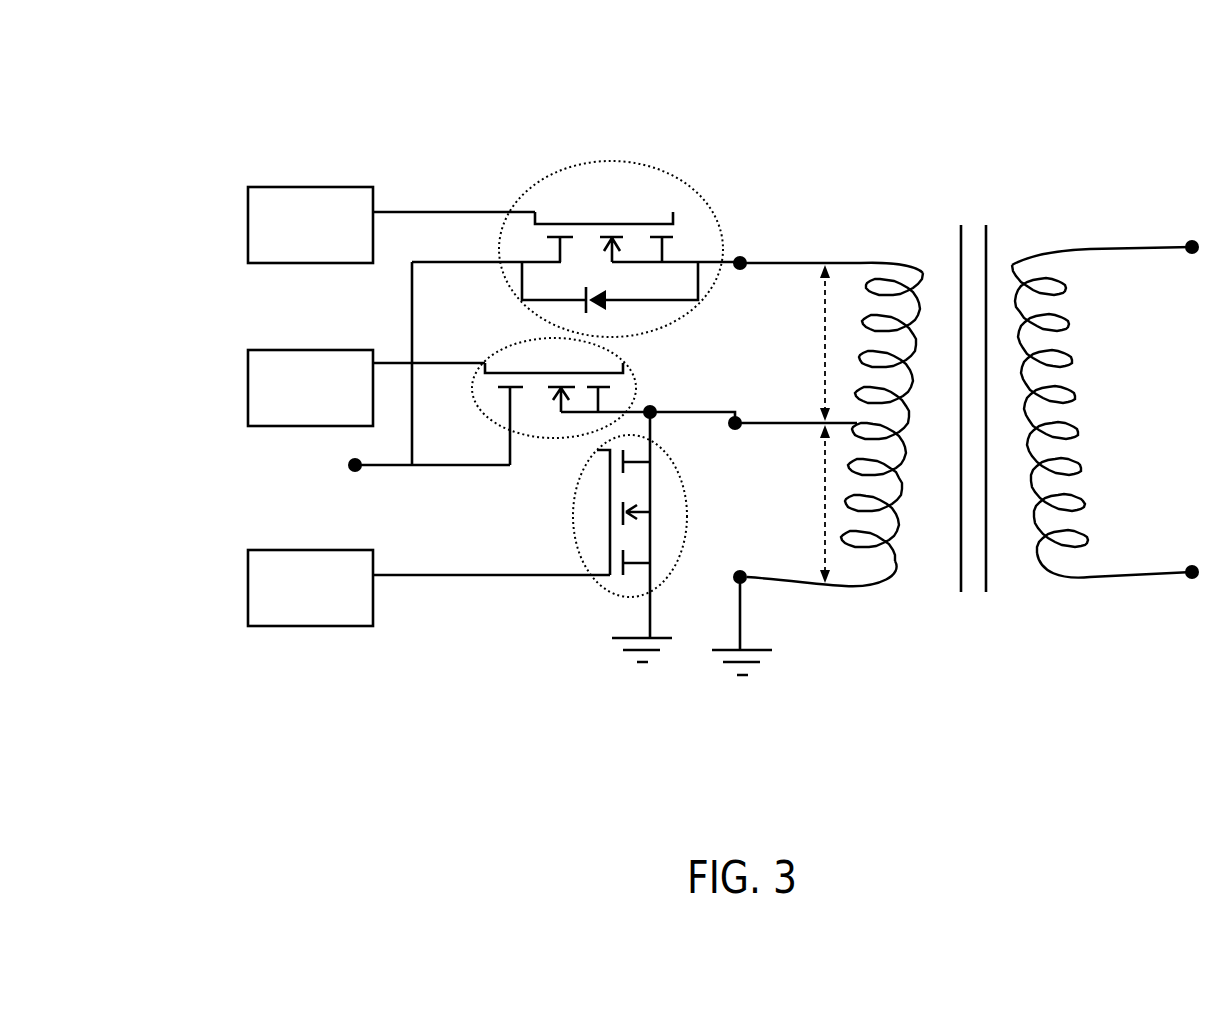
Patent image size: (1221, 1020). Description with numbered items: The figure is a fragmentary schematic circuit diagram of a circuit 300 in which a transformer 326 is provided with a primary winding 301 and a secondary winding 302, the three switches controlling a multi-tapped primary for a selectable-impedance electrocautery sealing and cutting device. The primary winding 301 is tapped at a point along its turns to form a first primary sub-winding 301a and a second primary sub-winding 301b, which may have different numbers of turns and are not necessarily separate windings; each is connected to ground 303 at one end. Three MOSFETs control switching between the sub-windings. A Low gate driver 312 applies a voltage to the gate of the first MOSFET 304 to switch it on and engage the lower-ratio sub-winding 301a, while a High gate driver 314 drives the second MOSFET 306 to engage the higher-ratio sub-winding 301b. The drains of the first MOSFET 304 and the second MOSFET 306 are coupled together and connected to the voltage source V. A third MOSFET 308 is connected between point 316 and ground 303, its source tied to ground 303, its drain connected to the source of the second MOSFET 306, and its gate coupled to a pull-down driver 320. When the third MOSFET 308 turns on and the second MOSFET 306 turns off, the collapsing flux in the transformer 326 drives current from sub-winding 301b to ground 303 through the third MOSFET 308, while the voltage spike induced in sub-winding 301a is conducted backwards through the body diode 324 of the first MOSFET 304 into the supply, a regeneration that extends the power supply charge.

The transformer drive circuit 300 is at (232, 150).
The primary winding 301 is at (907, 240).
The first primary sub-winding 301a is at (793, 343).
The second primary sub-winding 301b is at (793, 504).
The secondary winding 302 is at (1028, 238).
The ground 303 is at (645, 627).
The first MOSFET 304 is at (585, 187).
The second MOSFET 306 is at (507, 346).
The third MOSFET 308 is at (574, 518).
The Low gate driver 312 is at (391, 225).
The High gate driver 314 is at (366, 388).
The point 316 is at (651, 406).
The pull-down driver 320 is at (429, 588).
The body diode 324 is at (617, 288).
The transformer 326 is at (975, 636).